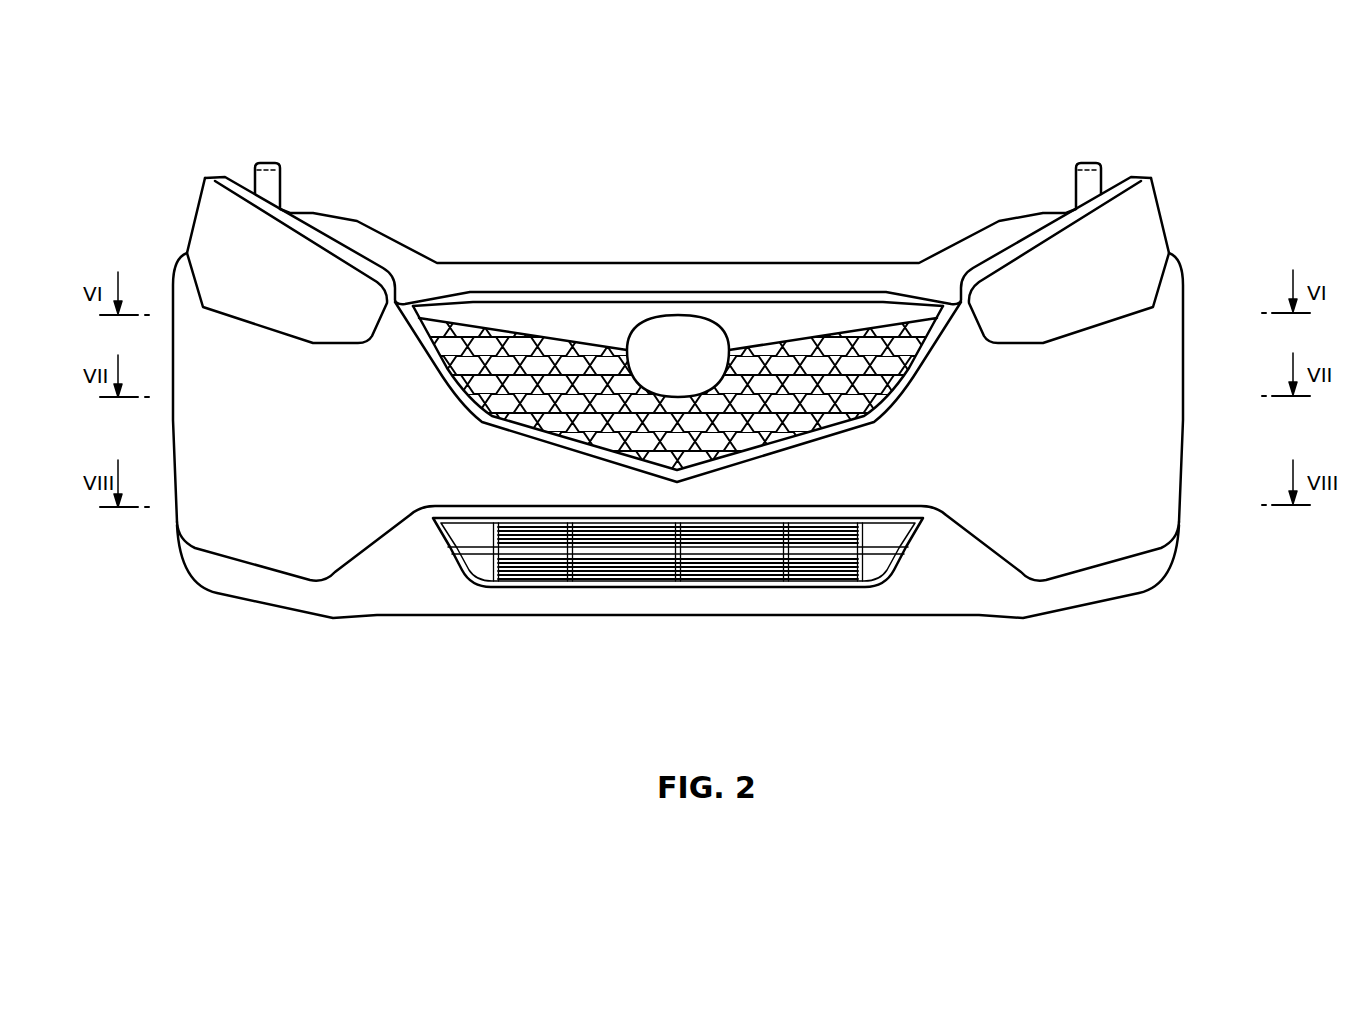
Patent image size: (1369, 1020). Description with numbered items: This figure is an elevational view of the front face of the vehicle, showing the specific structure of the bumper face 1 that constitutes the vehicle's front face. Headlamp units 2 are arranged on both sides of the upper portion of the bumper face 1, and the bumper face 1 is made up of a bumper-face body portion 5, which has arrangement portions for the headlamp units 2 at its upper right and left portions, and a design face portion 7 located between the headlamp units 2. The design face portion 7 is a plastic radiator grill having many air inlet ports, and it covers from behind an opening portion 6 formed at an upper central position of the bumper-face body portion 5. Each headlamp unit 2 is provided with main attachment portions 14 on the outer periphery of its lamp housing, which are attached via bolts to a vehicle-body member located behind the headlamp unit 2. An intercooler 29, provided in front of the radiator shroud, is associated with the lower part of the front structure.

The bumper face 1 is at (1193, 360).
The headlamp unit 2 is at (197, 227).
The bumper-face body portion 5 is at (1172, 405).
The opening portion 6 is at (900, 370).
The design face portion 7 is at (869, 338).
The main attachment portion 14 is at (267, 162).
The intercooler 29 is at (607, 578).